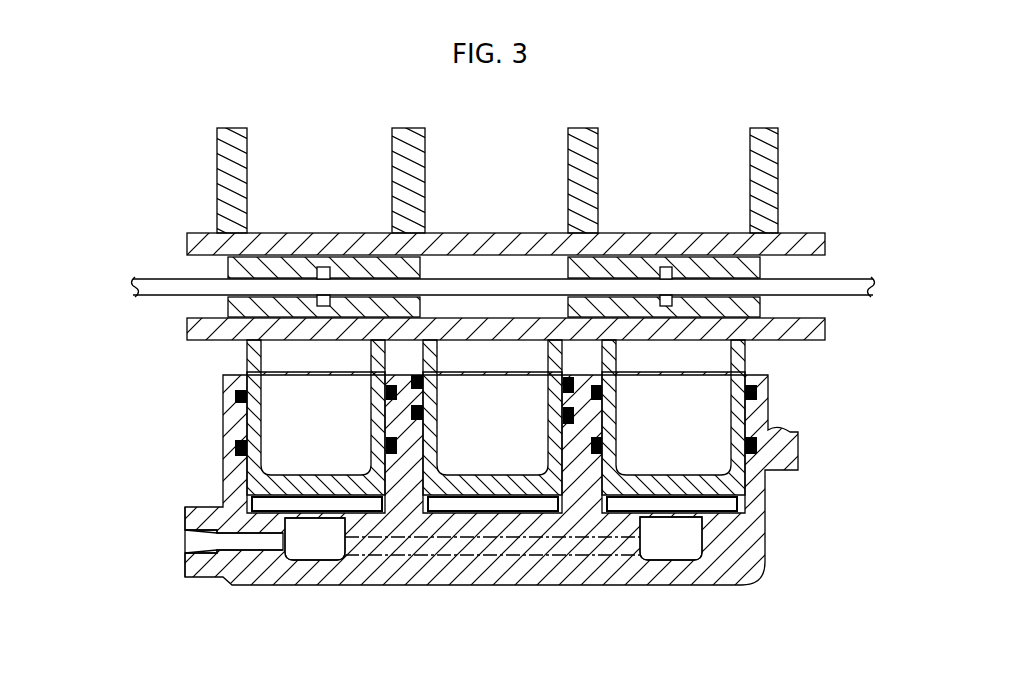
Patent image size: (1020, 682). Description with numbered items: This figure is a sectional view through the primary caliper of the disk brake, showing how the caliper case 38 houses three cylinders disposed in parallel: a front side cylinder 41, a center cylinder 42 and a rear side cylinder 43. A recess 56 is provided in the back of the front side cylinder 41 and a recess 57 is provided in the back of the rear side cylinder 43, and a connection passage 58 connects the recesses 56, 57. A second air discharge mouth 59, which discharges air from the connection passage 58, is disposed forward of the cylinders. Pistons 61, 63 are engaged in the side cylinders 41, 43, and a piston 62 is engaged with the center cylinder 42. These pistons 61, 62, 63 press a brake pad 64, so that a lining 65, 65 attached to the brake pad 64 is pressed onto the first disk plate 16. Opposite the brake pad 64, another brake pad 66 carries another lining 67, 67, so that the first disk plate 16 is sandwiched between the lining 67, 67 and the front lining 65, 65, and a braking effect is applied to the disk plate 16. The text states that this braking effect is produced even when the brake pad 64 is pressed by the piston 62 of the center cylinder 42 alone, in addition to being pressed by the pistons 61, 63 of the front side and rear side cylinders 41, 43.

The first disk plate 16 is at (133, 287).
The caliper case 38 is at (223, 453).
The front side cylinder 41 is at (257, 507).
The center cylinder 42 is at (555, 498).
The rear side cylinder 43 is at (725, 513).
The recess 56 is at (338, 550).
The recess 57 is at (698, 540).
The connection passage 58 is at (487, 548).
The second air discharge mouth 59 is at (187, 548).
The piston 61 is at (243, 358).
The piston 62 is at (510, 477).
The piston 63 is at (747, 352).
The brake pad 64 is at (187, 328).
The lining 65 is at (230, 308).
The brake pad 66 is at (187, 248).
The lining 67 is at (228, 270).